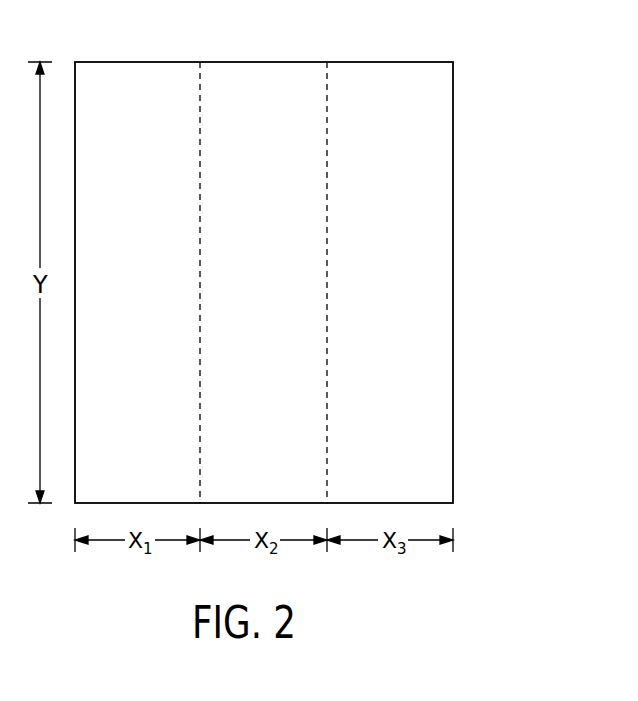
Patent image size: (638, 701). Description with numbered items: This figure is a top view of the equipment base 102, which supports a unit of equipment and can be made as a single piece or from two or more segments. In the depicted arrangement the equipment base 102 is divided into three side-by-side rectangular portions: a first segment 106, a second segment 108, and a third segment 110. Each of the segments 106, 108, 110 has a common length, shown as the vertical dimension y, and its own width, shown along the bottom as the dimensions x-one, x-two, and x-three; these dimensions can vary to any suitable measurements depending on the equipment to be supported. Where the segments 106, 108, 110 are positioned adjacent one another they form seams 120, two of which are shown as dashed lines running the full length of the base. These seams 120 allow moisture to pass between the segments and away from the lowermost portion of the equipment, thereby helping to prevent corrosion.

The equipment base 102 is at (520, 87).
The first segment 106 is at (134, 75).
The second segment 108 is at (287, 75).
The third segment 110 is at (416, 75).
The seam 120 is at (327, 170).